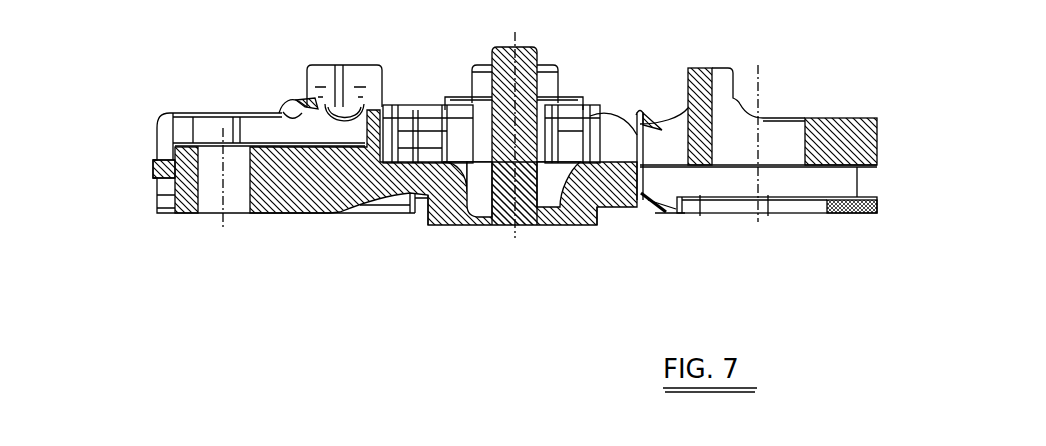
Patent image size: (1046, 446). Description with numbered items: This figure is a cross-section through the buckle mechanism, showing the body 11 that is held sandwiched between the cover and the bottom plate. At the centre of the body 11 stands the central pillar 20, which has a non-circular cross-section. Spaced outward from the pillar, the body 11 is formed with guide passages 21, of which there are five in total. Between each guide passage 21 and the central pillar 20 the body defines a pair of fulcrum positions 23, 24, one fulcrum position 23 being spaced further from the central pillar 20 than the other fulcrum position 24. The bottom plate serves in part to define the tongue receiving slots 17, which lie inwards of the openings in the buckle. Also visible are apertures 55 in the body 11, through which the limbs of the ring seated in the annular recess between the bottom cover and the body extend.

The body 11 is at (326, 227).
The tongue receiving slots 17 is at (727, 183).
The central pillar 20 is at (537, 63).
The guide passages 21 is at (713, 88).
The fulcrum position 23 is at (287, 117).
The fulcrum position 24 is at (352, 122).
The apertures 55 is at (657, 215).